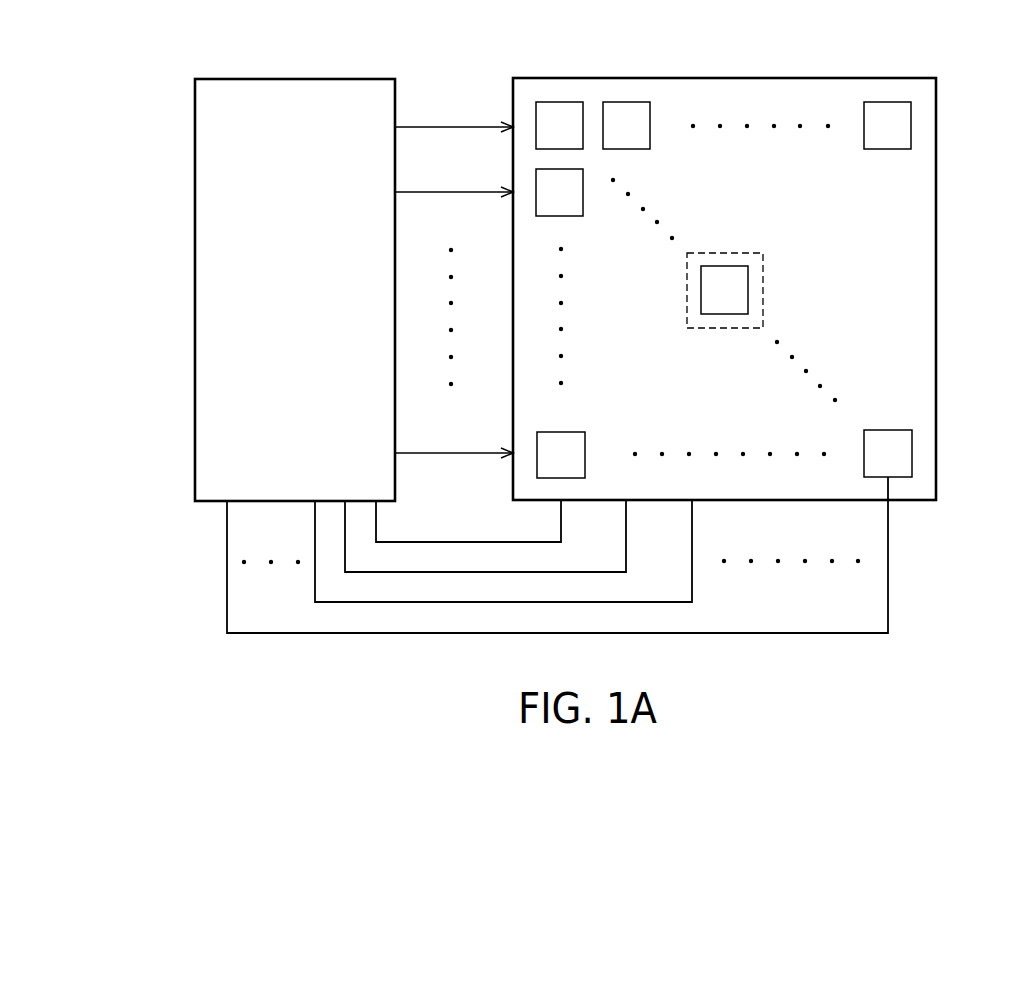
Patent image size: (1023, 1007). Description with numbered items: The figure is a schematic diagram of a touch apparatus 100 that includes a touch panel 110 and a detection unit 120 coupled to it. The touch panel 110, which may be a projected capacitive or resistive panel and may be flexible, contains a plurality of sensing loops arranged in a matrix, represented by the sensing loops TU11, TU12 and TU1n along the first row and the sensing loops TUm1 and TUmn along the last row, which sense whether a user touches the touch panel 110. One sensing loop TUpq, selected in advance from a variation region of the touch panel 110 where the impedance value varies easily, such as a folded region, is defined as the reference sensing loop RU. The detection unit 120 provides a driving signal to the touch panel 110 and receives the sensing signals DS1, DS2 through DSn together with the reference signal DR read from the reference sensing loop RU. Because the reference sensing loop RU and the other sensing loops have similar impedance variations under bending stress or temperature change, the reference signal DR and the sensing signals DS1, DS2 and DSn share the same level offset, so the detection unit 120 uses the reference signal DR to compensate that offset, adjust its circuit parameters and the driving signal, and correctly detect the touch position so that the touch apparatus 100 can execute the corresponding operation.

The touch apparatus 100 is at (1021, 675).
The touch panel 110 is at (752, 78).
The detection unit 120 is at (296, 78).
The sensing loop TU11 is at (561, 102).
The sensing loop TU12 is at (627, 102).
The sensing loop TU1n is at (889, 102).
The sensing loop TUpq is at (726, 266).
The sensing loop TUm1 is at (537, 467).
The sensing loop TUmn is at (912, 452).
The reference sensing loop RU is at (748, 288).
The sensing signal DS1 is at (468, 521).
The sensing signal DS2 is at (485, 536).
The reference signal DR is at (503, 551).
The sensing signal DSn is at (557, 555).